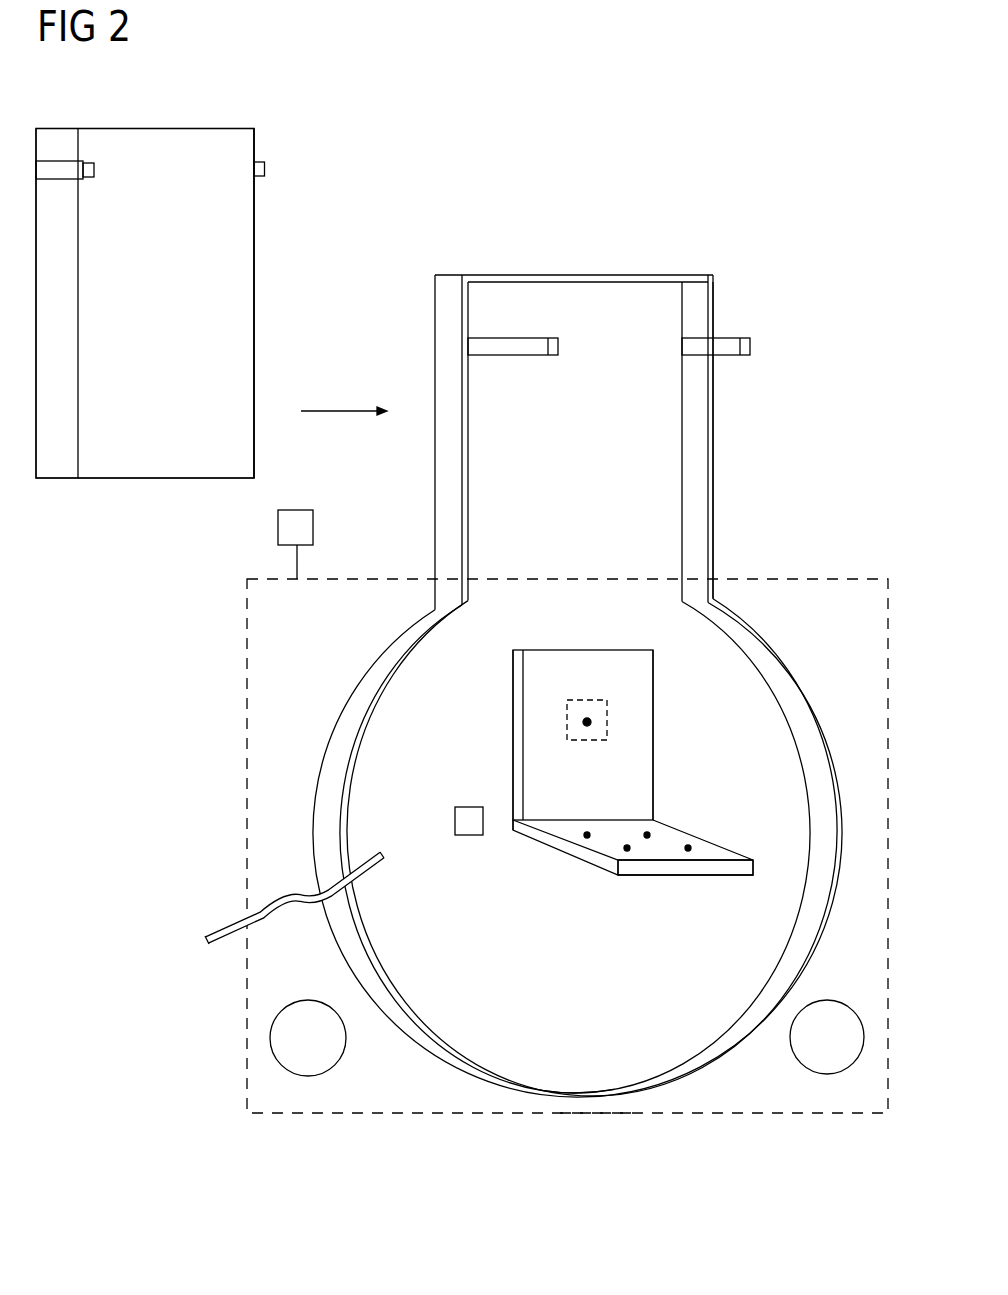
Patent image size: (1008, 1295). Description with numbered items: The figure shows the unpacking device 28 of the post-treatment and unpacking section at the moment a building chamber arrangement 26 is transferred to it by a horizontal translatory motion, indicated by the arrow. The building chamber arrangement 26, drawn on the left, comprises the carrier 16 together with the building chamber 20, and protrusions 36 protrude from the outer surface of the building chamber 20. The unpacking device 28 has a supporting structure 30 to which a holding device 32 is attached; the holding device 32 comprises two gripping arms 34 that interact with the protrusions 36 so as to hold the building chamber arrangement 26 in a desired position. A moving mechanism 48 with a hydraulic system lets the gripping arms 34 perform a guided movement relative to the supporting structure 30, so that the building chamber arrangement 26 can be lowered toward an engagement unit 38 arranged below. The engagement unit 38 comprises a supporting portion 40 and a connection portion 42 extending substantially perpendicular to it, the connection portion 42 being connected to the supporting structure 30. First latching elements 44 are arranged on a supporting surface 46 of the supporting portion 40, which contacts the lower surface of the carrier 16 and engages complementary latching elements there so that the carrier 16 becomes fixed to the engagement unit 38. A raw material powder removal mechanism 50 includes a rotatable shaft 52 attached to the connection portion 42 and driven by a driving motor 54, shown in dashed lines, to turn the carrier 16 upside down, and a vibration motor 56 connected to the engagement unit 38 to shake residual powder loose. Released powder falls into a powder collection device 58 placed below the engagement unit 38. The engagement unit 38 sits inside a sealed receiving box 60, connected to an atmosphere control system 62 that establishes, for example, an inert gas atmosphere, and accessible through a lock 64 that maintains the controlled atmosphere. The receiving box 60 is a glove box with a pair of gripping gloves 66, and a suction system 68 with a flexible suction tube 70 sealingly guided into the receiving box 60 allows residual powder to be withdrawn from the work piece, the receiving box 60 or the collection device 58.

The carrier 16 is at (150, 479).
The building chamber 20 is at (255, 313).
The building chamber arrangement 26 is at (281, 124).
The unpacking device 28 is at (804, 389).
The supporting structure 30 is at (590, 272).
The holding device 32 is at (773, 325).
The gripping arms 34 is at (733, 337).
The protrusions 36 is at (94, 166).
The engagement unit 38 is at (489, 748).
The supporting portion 40 is at (642, 872).
The connection portion 42 is at (623, 662).
The first latching elements 44 is at (650, 835).
The supporting surface 46 is at (723, 853).
The moving mechanism 48 is at (742, 508).
The raw material powder removal mechanism 50 is at (683, 755).
The rotatable shaft 52 is at (588, 730).
The driving motor 54 is at (607, 710).
The vibration motor 56 is at (470, 838).
The powder collection device 58 is at (596, 1090).
The receiving box 60 is at (603, 1118).
The atmosphere control system 62 is at (295, 508).
The lock 64 is at (592, 577).
The gripping gloves 66 is at (310, 1077).
The suction system 68 is at (223, 907).
The flexible suction tube 70 is at (228, 943).